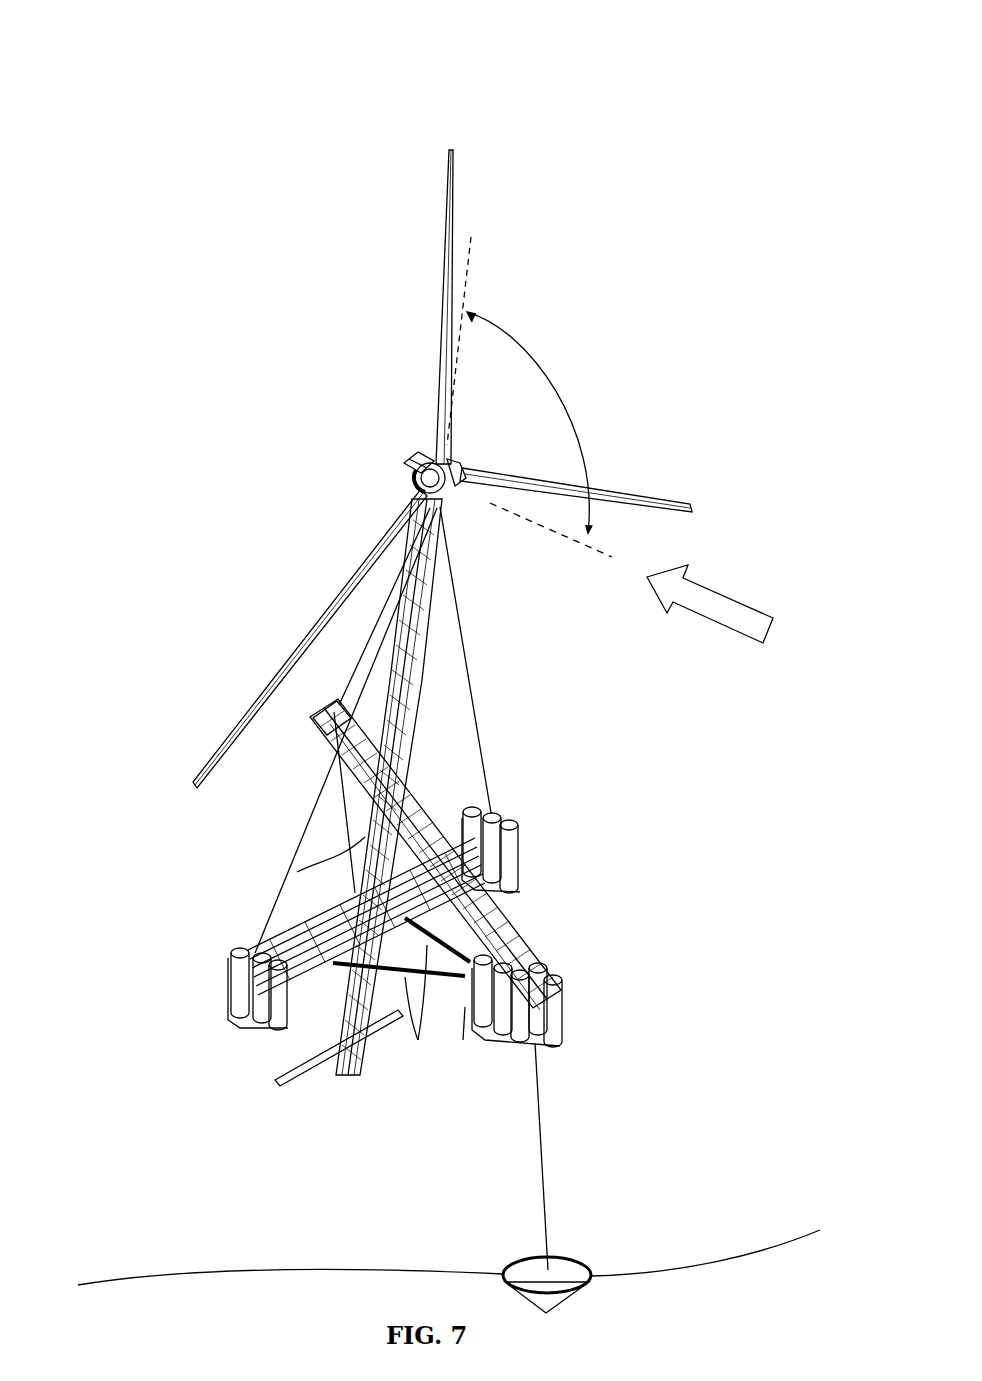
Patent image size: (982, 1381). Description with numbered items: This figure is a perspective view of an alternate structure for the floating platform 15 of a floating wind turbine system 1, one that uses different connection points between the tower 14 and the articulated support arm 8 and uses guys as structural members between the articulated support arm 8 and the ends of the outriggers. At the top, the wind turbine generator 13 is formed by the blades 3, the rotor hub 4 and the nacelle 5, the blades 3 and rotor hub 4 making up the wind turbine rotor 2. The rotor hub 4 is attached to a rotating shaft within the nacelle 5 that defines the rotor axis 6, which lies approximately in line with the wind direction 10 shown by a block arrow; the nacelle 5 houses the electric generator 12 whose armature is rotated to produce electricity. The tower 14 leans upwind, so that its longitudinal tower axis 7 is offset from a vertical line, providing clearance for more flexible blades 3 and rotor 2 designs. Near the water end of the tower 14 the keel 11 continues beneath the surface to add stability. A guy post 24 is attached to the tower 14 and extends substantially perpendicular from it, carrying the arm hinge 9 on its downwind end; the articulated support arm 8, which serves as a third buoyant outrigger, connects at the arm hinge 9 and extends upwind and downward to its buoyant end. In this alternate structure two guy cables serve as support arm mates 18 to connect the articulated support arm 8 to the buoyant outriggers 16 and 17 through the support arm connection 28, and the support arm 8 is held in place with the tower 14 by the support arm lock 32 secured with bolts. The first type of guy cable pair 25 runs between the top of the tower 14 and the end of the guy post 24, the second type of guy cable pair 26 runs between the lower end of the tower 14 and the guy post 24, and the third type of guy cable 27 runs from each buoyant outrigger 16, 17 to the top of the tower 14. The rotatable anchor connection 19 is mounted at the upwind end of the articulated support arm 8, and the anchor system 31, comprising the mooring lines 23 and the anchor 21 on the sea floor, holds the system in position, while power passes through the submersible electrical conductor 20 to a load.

The floating wind turbine system 1 is at (490, 125).
The wind turbine rotor 2 is at (565, 330).
The blades 3 is at (432, 278).
The rotor hub 4 is at (453, 505).
The nacelle 5 is at (412, 445).
The rotor axis 6 is at (538, 532).
The longitudinal tower axis 7 is at (478, 259).
The articulated support arm 8 is at (560, 955).
The arm hinge 9 is at (310, 723).
The wind direction 10 is at (725, 582).
The keel 11 is at (260, 1067).
The electric generator 12 is at (407, 490).
The wind turbine generator 13 is at (308, 458).
The tower 14 is at (432, 692).
The floating platform 15 is at (178, 650).
The buoyant outrigger 16 is at (215, 936).
The buoyant outrigger 17 is at (552, 862).
The support arm mate 18 is at (423, 1019).
The rotatable anchor connection 19 is at (550, 1040).
The submersible electrical conductor 20 is at (187, 1256).
The anchor 21 is at (600, 1248).
The mooring lines 23 is at (565, 1143).
The guy post 24 is at (362, 742).
The first type of guy cable pair 25 is at (333, 615).
The second type of guy cable pair 26 is at (320, 757).
The third type of guy cable 27 is at (360, 813).
The support arm connection 28 is at (463, 1040).
The anchor system 31 is at (684, 1058).
The support arm lock 32 is at (353, 880).